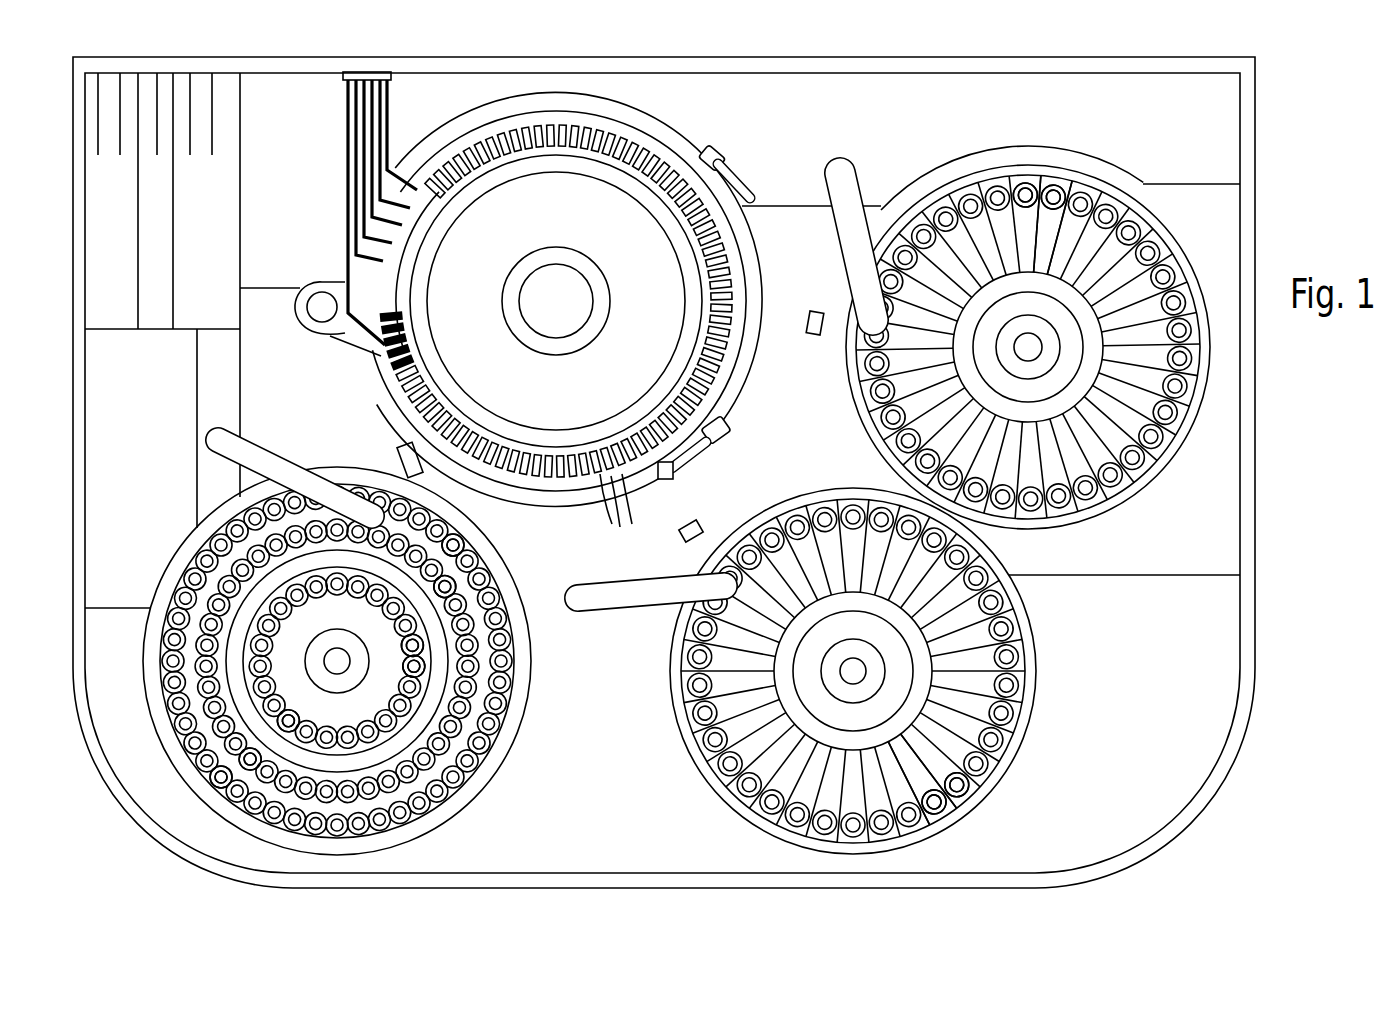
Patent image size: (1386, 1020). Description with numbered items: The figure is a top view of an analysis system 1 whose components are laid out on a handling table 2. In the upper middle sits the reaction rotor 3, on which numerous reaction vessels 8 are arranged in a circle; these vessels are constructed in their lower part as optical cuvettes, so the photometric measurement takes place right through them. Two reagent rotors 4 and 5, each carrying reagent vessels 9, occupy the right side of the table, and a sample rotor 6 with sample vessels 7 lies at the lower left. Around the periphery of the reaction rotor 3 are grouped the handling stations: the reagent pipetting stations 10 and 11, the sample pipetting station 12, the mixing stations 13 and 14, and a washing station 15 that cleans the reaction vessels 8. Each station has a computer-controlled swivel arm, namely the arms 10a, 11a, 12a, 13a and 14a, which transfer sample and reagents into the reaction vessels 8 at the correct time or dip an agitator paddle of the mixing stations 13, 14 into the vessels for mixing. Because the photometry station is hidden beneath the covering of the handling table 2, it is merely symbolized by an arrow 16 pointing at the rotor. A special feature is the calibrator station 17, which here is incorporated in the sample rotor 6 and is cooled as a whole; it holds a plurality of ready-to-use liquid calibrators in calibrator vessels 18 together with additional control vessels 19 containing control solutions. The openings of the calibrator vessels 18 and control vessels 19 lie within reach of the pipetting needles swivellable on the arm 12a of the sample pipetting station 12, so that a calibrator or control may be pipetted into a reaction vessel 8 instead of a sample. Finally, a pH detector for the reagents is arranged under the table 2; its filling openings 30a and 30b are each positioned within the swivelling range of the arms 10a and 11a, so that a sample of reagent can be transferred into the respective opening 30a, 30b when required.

The analysis system 1 is at (1270, 558).
The handling table 2 is at (1146, 688).
The reaction rotor 3 is at (684, 138).
The reagent rotor 4 is at (1115, 178).
The reagent rotor 5 is at (1032, 615).
The sample rotor 6 is at (522, 771).
The sample vessels 7 is at (476, 568).
The reaction vessels 8 is at (616, 512).
The reagent vessels 9 is at (1048, 182).
The pipetting station 10 is at (838, 236).
The swivel arm 10a is at (852, 182).
The pipetting station 11 is at (632, 616).
The swivel arm 11a is at (666, 582).
The sample pipetting station 12 is at (273, 444).
The swivel arm 12a is at (235, 455).
The mixing station 13 is at (740, 428).
The swivel arm 13a is at (708, 452).
The mixing station 14 is at (760, 183).
The swivel arm 14a is at (736, 168).
The washing station 15 is at (326, 280).
The arrow 16 is at (382, 389).
The calibrator station 17 is at (425, 642).
The calibrator vessels 18 is at (425, 662).
The control vessels 19 is at (293, 732).
The filling opening 30a is at (812, 337).
The filling opening 30b is at (700, 525).